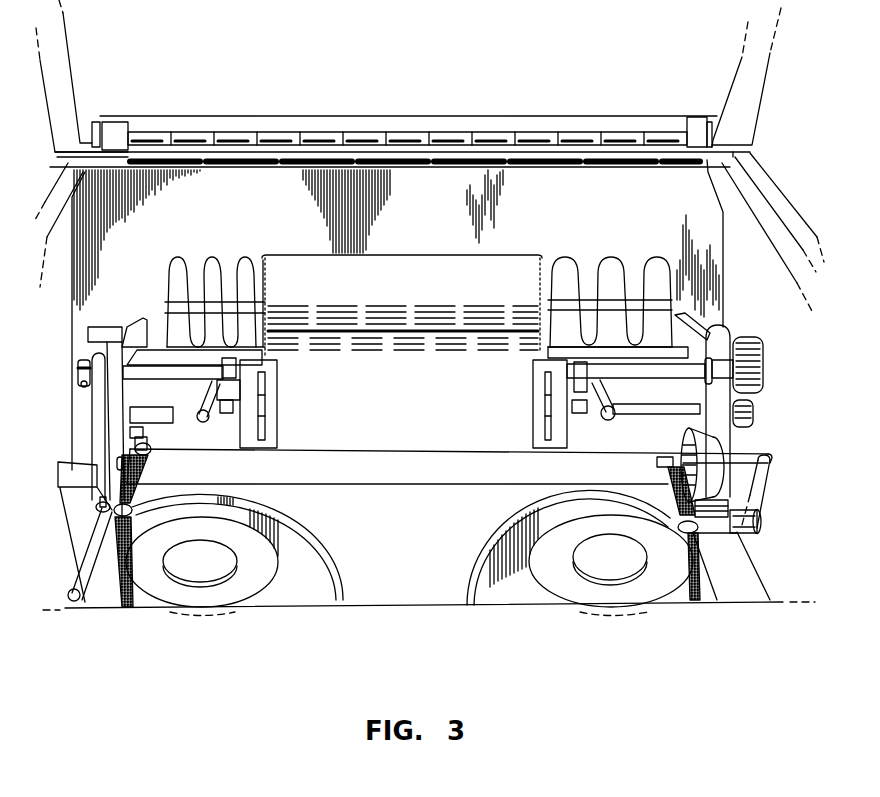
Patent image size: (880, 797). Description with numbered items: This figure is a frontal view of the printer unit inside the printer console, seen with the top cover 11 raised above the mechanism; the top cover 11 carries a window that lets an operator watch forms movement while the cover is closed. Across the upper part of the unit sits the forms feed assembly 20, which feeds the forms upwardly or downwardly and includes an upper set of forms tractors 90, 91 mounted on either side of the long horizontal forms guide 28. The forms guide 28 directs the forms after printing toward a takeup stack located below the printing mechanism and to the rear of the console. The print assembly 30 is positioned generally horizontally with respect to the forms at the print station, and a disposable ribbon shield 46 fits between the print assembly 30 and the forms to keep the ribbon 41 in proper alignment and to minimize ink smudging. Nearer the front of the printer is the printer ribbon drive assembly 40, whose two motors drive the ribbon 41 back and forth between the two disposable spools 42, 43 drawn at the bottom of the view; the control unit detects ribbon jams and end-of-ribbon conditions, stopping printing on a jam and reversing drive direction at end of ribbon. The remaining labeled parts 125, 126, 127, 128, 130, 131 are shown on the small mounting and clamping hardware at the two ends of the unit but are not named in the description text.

The top cover 11 is at (760, 112).
The forms feed assembly 20 is at (727, 319).
The forms guide 28 is at (612, 257).
The print assembly 30 is at (622, 446).
The printer ribbon drive assembly 40 is at (756, 565).
The ribbon 41 is at (123, 497).
The spool 42 is at (280, 553).
The spool 43 is at (530, 567).
The ribbon shield 46 is at (122, 447).
The forms tractor 90 is at (278, 402).
The forms tractor 91 is at (533, 400).
The pivot bolt 125 is at (100, 512).
The knob 126 is at (149, 455).
The block 127 is at (657, 463).
The knob 128 is at (761, 528).
The pin 130 is at (117, 463).
The lever 131 is at (708, 478).